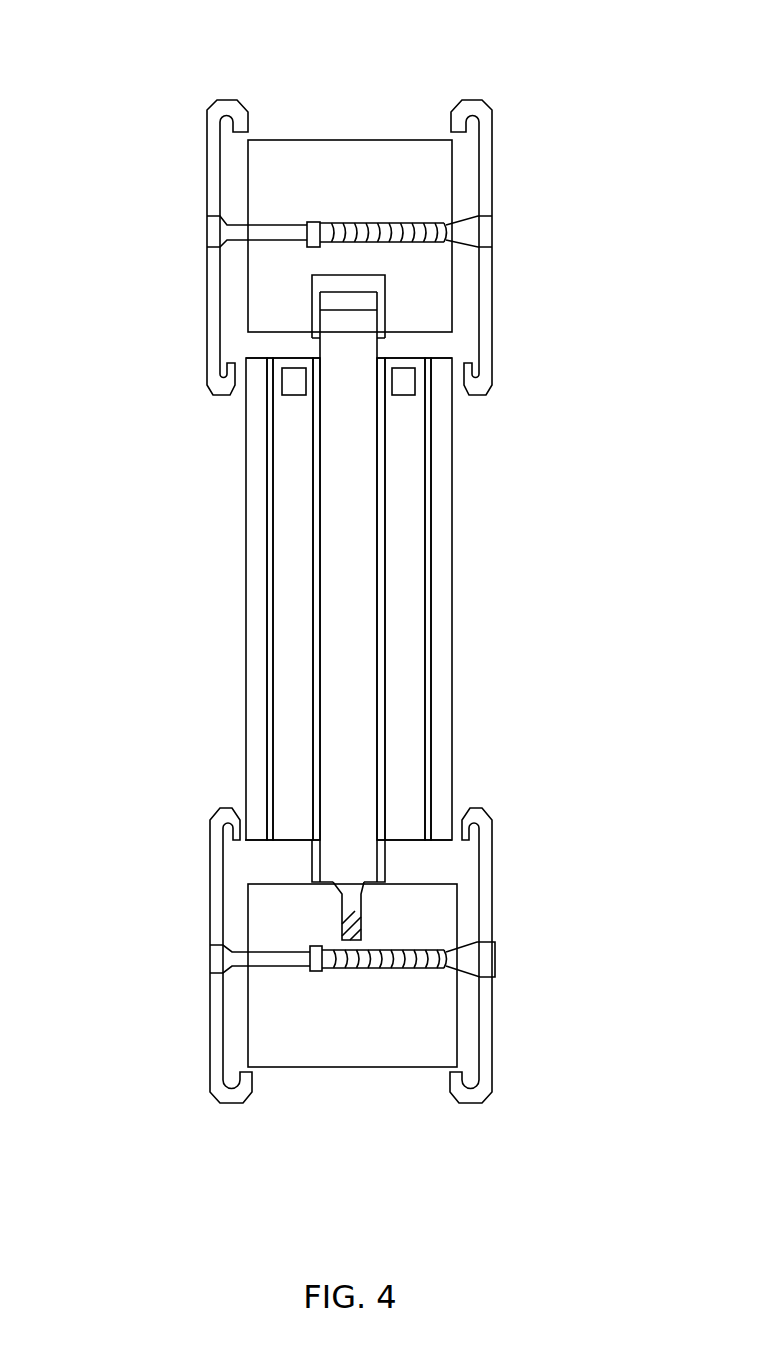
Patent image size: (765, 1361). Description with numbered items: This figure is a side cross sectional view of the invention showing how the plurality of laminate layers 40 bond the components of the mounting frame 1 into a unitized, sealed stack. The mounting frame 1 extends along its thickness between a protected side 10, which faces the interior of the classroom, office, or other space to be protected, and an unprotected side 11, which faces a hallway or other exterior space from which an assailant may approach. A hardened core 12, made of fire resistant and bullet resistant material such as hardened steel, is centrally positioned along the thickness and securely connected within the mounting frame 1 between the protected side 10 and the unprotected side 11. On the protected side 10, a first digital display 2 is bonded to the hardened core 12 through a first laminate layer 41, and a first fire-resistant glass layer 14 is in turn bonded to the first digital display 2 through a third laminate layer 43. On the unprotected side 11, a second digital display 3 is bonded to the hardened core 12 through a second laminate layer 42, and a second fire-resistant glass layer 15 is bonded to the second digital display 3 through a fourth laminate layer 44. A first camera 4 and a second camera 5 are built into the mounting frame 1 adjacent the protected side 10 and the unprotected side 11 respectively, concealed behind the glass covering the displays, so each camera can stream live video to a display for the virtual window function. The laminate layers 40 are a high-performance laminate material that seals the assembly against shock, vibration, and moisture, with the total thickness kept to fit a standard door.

The mounting frame 1 is at (327, 78).
The first digital display 2 is at (409, 593).
The second digital display 3 is at (290, 593).
The first camera 4 is at (396, 394).
The second camera 5 is at (287, 394).
The protected side 10 is at (560, 447).
The unprotected side 11 is at (133, 460).
The hardened core 12 is at (338, 436).
The first fire-resistant glass layer 14 is at (444, 502).
The second fire-resistant glass layer 15 is at (255, 502).
The plurality of laminate layers 40 is at (263, 459).
The first laminate layer 41 is at (382, 638).
The second laminate layer 42 is at (317, 638).
The third laminate layer 43 is at (427, 548).
The fourth laminate layer 44 is at (272, 548).